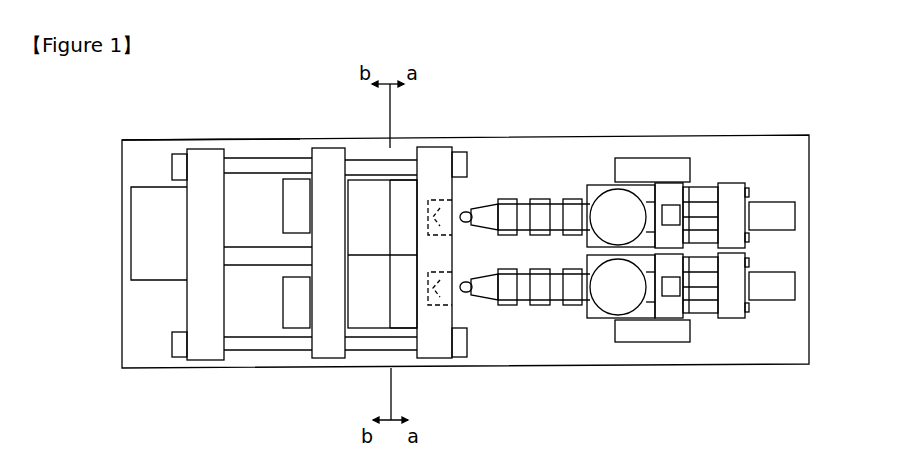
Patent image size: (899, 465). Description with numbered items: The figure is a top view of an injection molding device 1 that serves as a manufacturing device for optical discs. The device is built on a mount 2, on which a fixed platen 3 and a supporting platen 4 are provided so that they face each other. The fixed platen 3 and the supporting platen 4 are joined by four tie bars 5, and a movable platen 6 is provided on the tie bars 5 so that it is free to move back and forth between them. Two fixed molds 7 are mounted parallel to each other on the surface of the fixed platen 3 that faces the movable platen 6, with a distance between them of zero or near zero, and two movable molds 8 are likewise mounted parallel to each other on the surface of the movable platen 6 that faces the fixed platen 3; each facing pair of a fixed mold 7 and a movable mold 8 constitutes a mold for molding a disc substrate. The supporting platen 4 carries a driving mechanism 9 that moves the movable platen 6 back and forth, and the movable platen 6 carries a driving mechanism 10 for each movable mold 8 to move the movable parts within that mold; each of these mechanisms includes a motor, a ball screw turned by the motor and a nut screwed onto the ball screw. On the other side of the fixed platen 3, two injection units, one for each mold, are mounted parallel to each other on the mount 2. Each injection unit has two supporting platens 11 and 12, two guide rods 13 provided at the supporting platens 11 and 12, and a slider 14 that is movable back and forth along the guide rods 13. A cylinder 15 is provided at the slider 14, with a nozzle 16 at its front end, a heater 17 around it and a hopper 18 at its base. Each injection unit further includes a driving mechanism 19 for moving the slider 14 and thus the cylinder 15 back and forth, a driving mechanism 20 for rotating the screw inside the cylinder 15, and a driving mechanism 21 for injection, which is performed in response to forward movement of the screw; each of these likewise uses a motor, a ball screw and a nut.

The injection molding device 1 is at (123, 139).
The mount 2 is at (150, 155).
The fixed platen 3 is at (436, 160).
The supporting platen 4 is at (205, 155).
The tie bars 5 is at (253, 167).
The movable platen 6 is at (328, 160).
The fixed molds 7 is at (408, 186).
The movable molds 8 is at (367, 190).
The driving mechanism 9 is at (135, 237).
The driving mechanism 10 is at (296, 184).
The supporting platen 11 is at (588, 190).
The supporting platen 12 is at (734, 184).
The guide rods 13 is at (701, 190).
The slider 14 is at (661, 190).
The cylinder 15 is at (542, 200).
The nozzle 16 is at (468, 210).
The heater 17 is at (506, 198).
The hopper 18 is at (614, 192).
The driving mechanism 19 is at (631, 163).
The driving mechanism 20 is at (672, 208).
The driving mechanism 21 is at (790, 216).